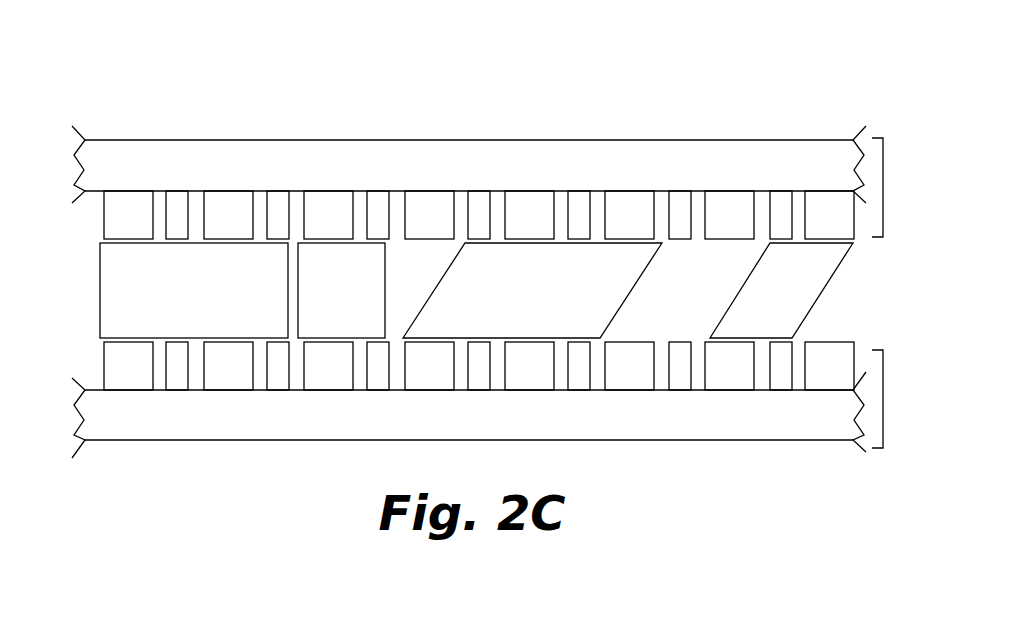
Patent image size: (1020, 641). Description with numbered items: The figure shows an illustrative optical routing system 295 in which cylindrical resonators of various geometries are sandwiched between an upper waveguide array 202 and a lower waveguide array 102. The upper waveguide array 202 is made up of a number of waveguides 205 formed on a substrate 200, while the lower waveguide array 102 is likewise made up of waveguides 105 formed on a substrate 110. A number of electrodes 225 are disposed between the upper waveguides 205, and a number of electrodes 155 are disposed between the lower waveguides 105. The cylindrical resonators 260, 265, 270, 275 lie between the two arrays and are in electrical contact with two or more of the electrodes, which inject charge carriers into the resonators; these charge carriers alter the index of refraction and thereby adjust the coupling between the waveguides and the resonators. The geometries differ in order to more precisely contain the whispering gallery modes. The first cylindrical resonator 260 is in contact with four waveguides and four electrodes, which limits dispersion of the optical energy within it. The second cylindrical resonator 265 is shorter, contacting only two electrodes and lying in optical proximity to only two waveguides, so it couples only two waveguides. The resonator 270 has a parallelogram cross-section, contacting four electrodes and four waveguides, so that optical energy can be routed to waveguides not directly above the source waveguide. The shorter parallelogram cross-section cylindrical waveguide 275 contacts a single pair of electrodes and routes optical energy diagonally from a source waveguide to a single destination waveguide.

The optical routing system 295 is at (100, 66).
The substrate 200 is at (271, 176).
The upper waveguide array 202 is at (884, 152).
The waveguides 205 is at (115, 216).
The electrodes 225 is at (178, 191).
The first cylindrical resonator 260 is at (169, 299).
The second cylindrical resonator 265 is at (320, 299).
The parallelogram cross-section cylindrical resonator 270 is at (498, 299).
The shorter parallelogram cross-section cylindrical waveguide 275 is at (764, 299).
The waveguides 105 is at (118, 363).
The substrate 110 is at (276, 429).
The electrodes 155 is at (178, 378).
The lower waveguide array 102 is at (883, 440).